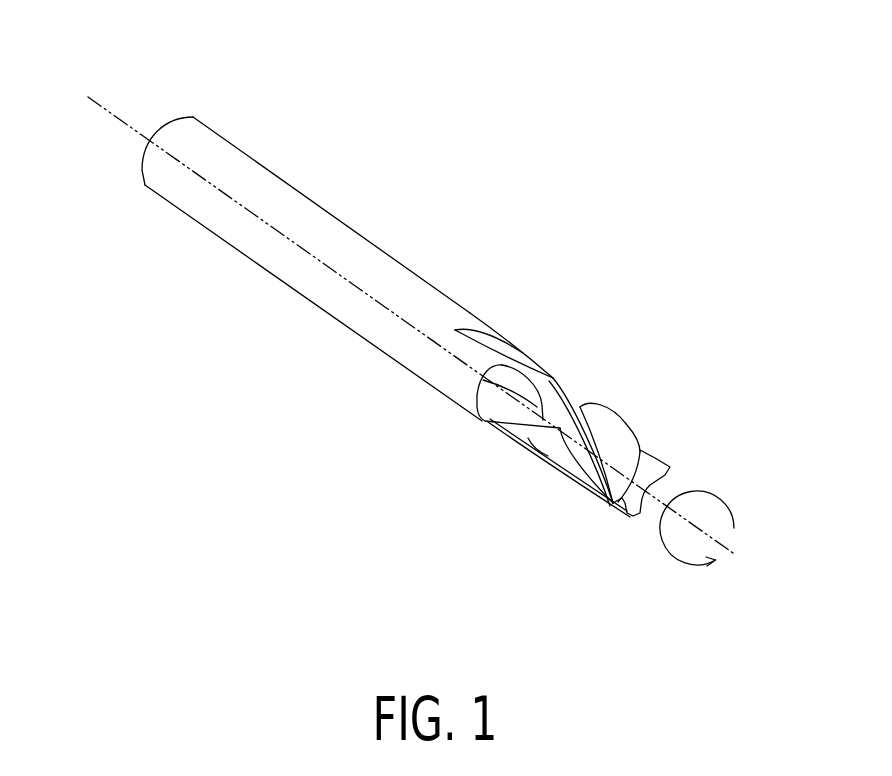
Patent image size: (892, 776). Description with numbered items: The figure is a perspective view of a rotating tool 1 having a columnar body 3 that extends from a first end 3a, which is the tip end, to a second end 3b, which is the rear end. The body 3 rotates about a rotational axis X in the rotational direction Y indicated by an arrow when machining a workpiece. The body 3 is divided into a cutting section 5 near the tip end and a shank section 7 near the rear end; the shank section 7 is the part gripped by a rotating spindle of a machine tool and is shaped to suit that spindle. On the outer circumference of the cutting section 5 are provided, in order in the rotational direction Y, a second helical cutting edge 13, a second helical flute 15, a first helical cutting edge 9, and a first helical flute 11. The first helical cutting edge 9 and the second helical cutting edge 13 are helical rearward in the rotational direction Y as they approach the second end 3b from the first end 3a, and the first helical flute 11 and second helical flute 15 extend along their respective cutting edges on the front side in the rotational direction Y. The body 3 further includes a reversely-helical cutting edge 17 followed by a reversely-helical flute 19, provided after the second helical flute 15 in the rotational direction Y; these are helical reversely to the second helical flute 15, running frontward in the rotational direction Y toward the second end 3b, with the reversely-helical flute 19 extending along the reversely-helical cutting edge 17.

The rotating tool 1 is at (412, 243).
The body 3 is at (74, 282).
The first end 3a is at (643, 488).
The second end 3b is at (162, 128).
The cutting section 5 is at (394, 421).
The shank section 7 is at (114, 222).
The first helical cutting edge 9 is at (640, 438).
The first helical flute 11 is at (604, 425).
The second helical cutting edge 13 is at (567, 405).
The second helical flute 15 is at (548, 397).
The reversely-helical cutting edge 17 is at (502, 427).
The reversely-helical flute 19 is at (545, 438).
The rotational axis X is at (135, 128).
The rotational direction Y is at (705, 519).